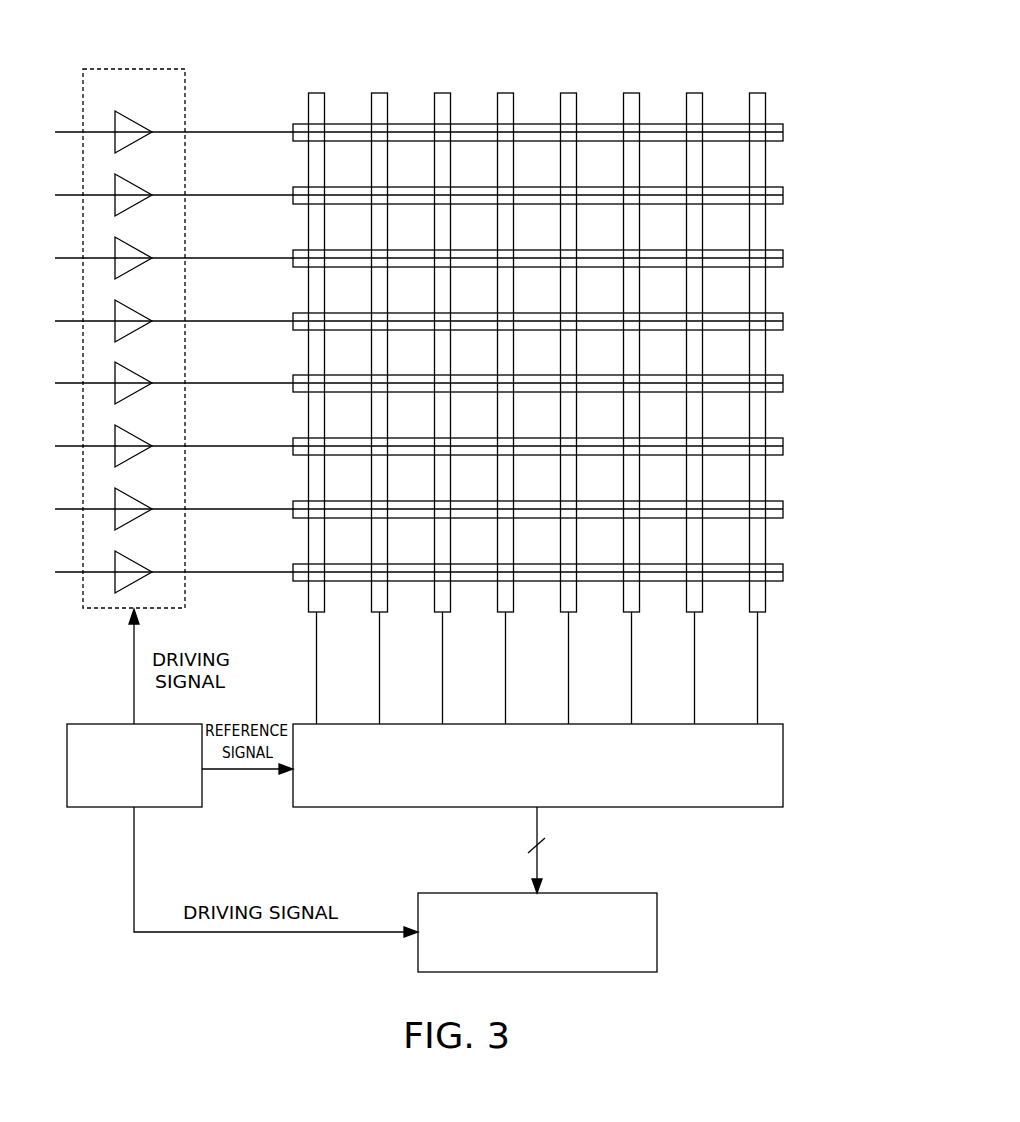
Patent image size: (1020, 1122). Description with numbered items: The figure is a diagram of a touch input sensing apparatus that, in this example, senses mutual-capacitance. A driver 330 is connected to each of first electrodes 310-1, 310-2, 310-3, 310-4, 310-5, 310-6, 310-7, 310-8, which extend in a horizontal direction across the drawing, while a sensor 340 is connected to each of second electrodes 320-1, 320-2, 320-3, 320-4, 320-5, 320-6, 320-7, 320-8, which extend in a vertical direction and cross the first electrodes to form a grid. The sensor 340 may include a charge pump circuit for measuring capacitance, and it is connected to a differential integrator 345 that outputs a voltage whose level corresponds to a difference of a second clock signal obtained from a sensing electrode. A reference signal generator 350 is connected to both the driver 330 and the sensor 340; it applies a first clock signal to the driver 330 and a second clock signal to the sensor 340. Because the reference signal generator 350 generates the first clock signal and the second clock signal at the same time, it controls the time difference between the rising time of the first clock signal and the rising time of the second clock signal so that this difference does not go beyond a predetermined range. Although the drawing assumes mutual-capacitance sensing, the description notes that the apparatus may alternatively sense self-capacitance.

The driver 330 is at (147, 69).
The first electrode 310-1 is at (783, 131).
The first electrode 310-2 is at (783, 194).
The first electrode 310-3 is at (783, 257).
The first electrode 310-4 is at (783, 320).
The first electrode 310-5 is at (783, 382).
The first electrode 310-6 is at (783, 445).
The first electrode 310-7 is at (783, 508).
The first electrode 310-8 is at (783, 571).
The second electrode 320-1 is at (316, 93).
The second electrode 320-2 is at (380, 93).
The second electrode 320-3 is at (442, 93).
The second electrode 320-4 is at (506, 93).
The second electrode 320-5 is at (568, 93).
The second electrode 320-6 is at (632, 93).
The second electrode 320-7 is at (694, 93).
The second electrode 320-8 is at (758, 93).
The sensor 340 is at (740, 807).
The differential integrator 345 is at (613, 893).
The reference signal generator 350 is at (158, 807).